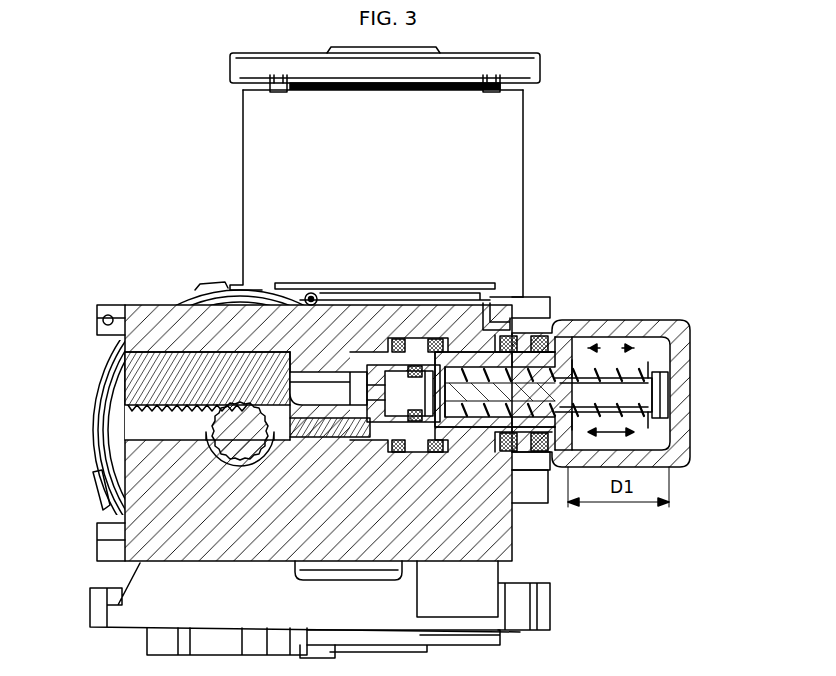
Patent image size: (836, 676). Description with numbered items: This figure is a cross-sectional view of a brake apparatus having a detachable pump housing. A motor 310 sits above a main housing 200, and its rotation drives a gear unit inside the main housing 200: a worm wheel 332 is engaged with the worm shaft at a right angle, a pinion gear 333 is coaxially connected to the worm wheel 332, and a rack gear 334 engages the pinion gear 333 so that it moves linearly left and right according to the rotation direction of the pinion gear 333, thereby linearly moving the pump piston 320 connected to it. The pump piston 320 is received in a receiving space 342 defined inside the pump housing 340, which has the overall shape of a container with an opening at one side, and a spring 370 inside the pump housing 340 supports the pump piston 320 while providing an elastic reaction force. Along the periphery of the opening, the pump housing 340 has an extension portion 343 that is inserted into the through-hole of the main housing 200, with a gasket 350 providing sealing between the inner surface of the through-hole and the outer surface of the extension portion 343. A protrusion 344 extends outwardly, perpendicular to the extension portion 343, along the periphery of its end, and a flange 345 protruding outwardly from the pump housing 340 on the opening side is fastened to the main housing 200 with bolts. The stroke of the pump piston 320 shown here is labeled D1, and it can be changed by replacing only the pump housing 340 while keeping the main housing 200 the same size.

The main housing 200 is at (520, 525).
The motor 310 is at (527, 136).
The pump piston 320 is at (605, 330).
The worm wheel 332 is at (100, 418).
The pinion gear 333 is at (100, 455).
The rack gear 334 is at (132, 376).
The pump housing 340 is at (672, 392).
The receiving space 342 is at (655, 348).
The extension portion 343 is at (520, 345).
The protrusion 344 is at (522, 295).
The flange 345 is at (540, 336).
The gasket 350 is at (490, 356).
The spring 370 is at (645, 415).